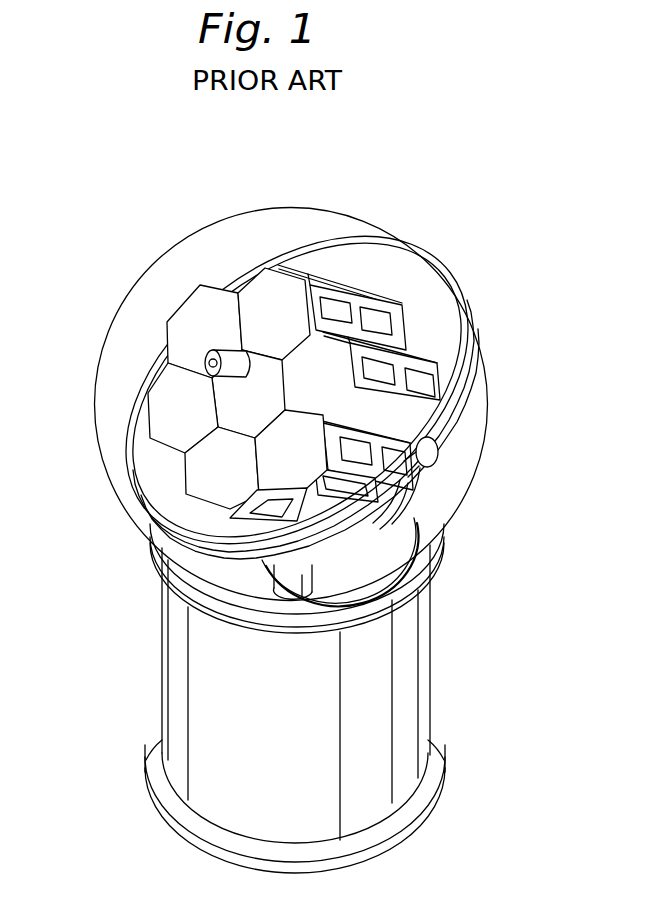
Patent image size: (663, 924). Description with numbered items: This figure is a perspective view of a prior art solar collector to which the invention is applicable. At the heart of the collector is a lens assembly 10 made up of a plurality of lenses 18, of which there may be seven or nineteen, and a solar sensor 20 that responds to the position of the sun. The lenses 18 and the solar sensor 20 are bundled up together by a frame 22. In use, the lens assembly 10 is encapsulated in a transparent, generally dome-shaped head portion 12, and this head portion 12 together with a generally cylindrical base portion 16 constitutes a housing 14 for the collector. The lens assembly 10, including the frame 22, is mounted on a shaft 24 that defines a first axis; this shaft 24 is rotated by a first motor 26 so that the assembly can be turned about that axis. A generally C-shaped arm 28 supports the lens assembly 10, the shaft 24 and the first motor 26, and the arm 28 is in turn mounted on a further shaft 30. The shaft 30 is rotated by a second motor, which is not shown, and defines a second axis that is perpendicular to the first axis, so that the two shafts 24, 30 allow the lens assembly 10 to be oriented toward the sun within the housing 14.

The lens assembly 10 is at (275, 421).
The head portion 12 is at (350, 220).
The housing 14 is at (100, 468).
The base portion 16 is at (162, 669).
The lenses 18 is at (210, 296).
The solar sensor 20 is at (232, 384).
The frame 22 is at (345, 284).
The shaft 24 is at (345, 452).
The first motor 26 is at (440, 452).
The C-shaped arm 28 is at (390, 522).
The shaft 30 is at (283, 588).